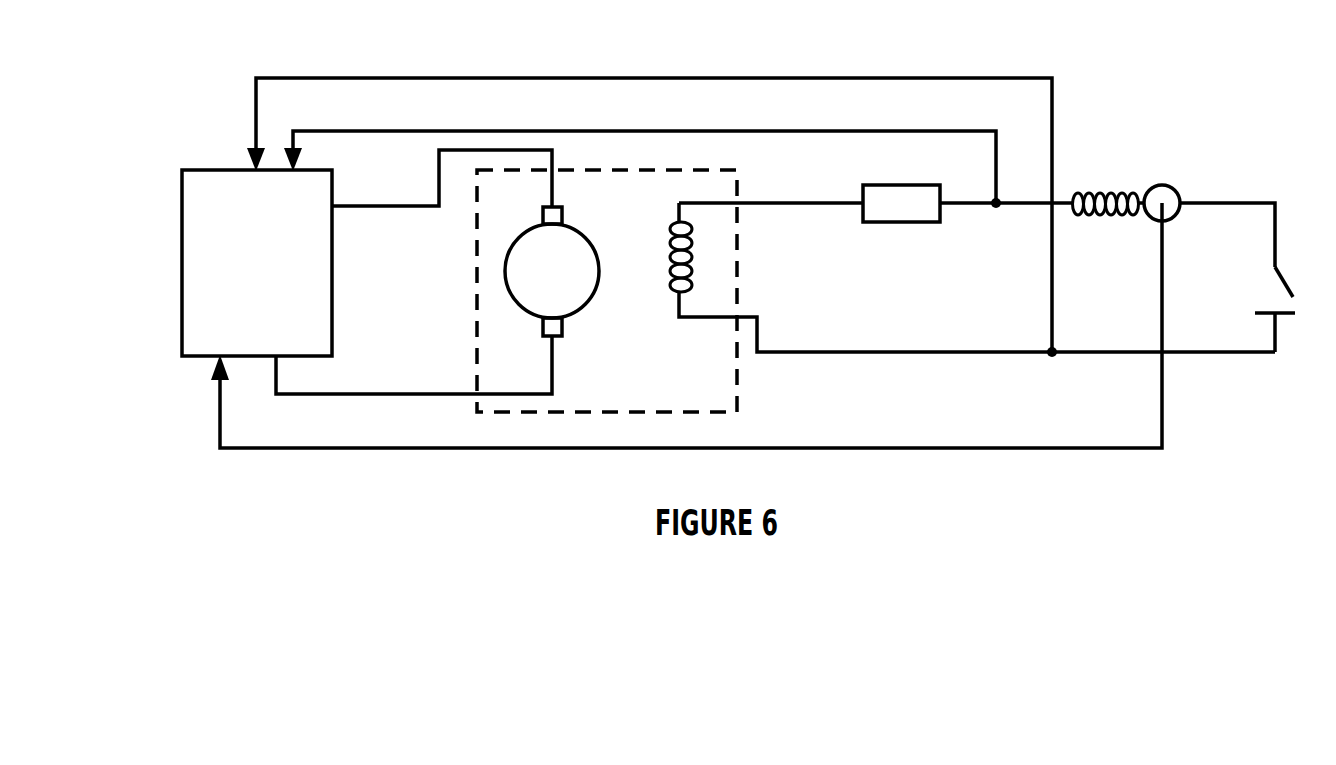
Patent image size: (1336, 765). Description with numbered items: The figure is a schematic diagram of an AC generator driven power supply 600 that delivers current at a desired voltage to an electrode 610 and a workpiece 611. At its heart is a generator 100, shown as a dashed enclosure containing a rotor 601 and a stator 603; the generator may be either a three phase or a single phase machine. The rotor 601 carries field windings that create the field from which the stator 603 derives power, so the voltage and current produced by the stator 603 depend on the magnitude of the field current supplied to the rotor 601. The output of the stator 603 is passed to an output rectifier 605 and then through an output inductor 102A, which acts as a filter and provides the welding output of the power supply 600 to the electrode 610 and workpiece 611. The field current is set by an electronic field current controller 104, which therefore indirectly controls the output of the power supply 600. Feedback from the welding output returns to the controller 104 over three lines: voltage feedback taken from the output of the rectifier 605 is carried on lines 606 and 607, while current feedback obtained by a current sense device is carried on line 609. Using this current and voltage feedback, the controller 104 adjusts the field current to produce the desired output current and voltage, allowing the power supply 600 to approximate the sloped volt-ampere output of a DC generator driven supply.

The generator 100 is at (737, 178).
The output inductor 102A is at (1100, 192).
The electronic field current controller 104 is at (212, 170).
The AC generator driven power supply 600 is at (1123, 130).
The rotor 601 is at (505, 280).
The stator 603 is at (692, 244).
The output rectifier 605 is at (892, 223).
The feedback line 606 is at (568, 78).
The feedback line 607 is at (678, 131).
The feedback line 609 is at (865, 449).
The electrode 610 is at (1286, 283).
The workpiece 611 is at (1286, 318).